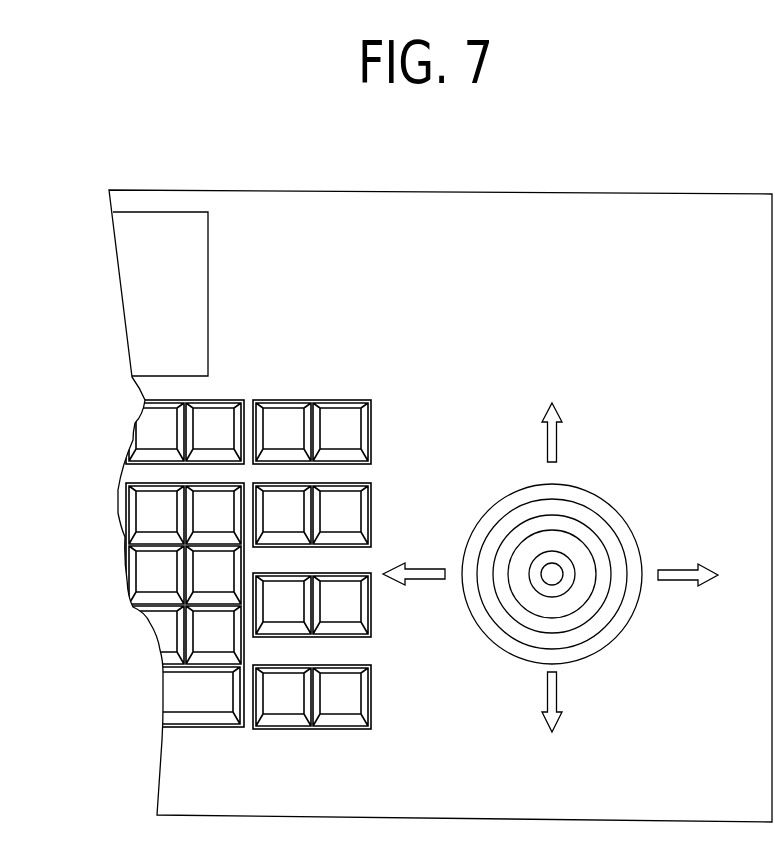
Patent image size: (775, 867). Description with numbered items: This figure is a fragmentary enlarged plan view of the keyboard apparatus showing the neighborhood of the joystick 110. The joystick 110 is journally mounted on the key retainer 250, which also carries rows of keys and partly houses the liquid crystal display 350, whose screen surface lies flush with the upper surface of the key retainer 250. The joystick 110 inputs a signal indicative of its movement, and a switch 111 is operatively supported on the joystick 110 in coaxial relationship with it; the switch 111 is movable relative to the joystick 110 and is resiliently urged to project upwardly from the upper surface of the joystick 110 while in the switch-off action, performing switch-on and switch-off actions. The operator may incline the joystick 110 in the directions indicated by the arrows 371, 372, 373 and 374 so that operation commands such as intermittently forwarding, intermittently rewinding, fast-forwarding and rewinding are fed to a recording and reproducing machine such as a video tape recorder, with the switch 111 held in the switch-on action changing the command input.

The key retainer 250 is at (597, 225).
The liquid crystal display 350 is at (212, 268).
The joystick 110 is at (553, 553).
The switch 111 is at (553, 574).
The arrow 371 is at (547, 445).
The arrow 372 is at (547, 690).
The arrow 373 is at (415, 571).
The arrow 374 is at (672, 576).